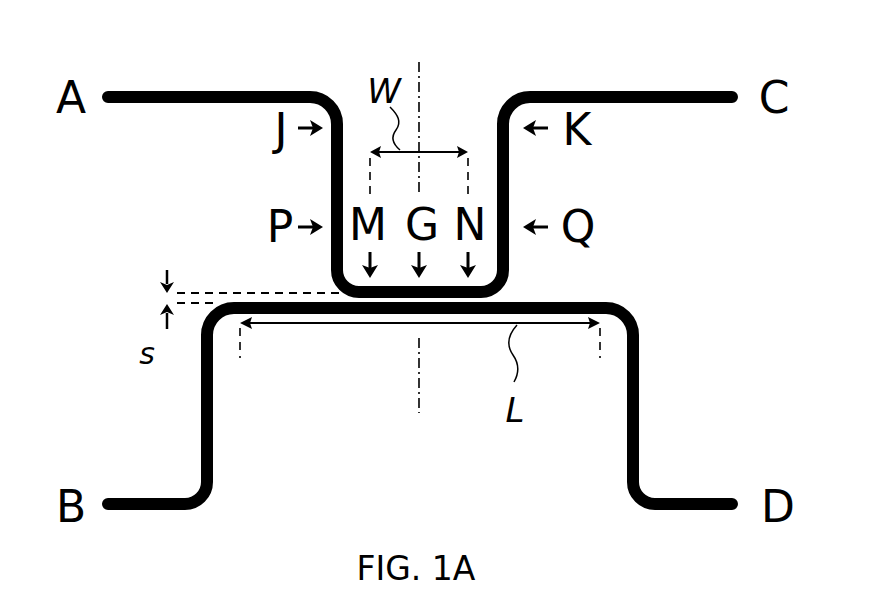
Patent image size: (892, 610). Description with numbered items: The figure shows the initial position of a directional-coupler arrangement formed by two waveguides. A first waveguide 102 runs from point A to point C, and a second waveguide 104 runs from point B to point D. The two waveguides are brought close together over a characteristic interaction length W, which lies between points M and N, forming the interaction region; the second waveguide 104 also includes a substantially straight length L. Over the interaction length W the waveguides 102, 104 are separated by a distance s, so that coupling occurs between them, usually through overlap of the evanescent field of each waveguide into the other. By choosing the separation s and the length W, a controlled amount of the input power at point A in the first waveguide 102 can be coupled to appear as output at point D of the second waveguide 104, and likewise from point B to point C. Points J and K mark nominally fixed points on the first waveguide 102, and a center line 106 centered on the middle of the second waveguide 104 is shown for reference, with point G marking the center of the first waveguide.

The first waveguide 102 is at (150, 91).
The second waveguide 104 is at (202, 423).
The center line 106 is at (420, 70).